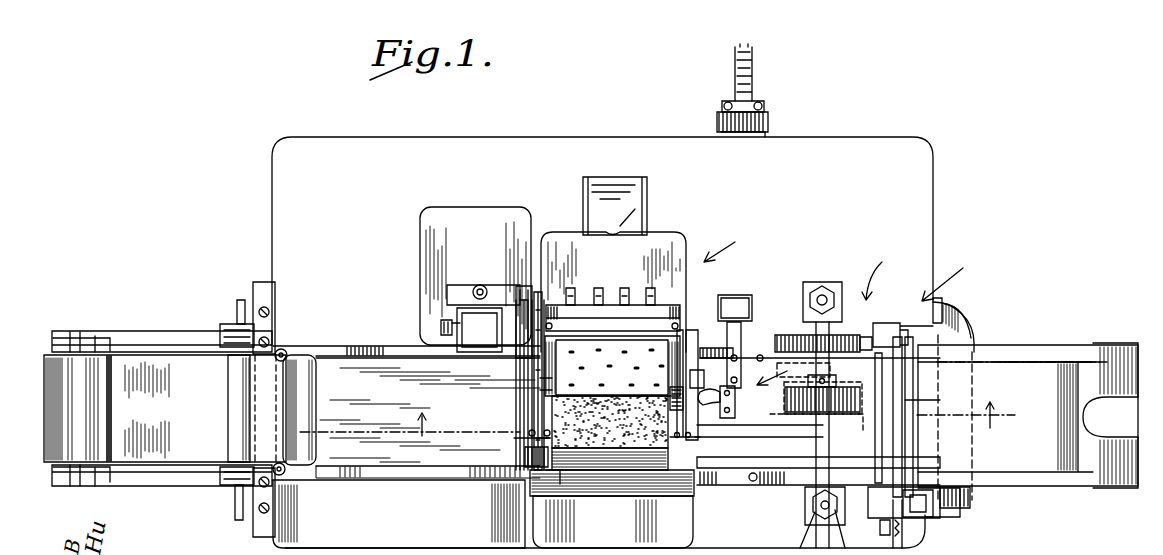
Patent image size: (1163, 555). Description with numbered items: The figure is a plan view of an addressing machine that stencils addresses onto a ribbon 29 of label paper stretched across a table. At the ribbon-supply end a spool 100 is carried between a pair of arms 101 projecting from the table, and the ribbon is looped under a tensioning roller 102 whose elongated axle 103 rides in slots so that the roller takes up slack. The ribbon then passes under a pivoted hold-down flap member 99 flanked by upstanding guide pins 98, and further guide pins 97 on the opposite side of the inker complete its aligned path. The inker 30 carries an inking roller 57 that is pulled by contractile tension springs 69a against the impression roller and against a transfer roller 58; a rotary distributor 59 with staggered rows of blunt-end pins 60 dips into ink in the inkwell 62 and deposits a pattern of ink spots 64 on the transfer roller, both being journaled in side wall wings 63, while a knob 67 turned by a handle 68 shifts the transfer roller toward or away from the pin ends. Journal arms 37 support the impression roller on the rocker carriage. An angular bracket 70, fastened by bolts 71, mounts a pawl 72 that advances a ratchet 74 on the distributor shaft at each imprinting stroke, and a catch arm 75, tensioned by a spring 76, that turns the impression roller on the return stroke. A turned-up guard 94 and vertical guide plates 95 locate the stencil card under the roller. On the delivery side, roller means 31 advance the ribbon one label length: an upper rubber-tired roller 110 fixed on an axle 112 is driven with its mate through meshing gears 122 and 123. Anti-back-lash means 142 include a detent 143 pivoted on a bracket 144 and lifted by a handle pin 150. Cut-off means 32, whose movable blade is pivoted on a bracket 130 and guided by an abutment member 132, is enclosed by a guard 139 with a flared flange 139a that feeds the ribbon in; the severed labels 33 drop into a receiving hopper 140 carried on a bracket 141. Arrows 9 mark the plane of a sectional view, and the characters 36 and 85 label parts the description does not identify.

The section line 9 is at (657, 422).
The ribbon 29 is at (365, 457).
The inker 30 is at (725, 245).
The roller means 31 is at (878, 340).
The cut-off means 32 is at (943, 273).
The labels 33 is at (1055, 465).
The plate 36 is at (665, 488).
The journal arms 37 is at (668, 480).
The inking roller 57 is at (550, 411).
The transfer roller 58 is at (705, 312).
The rotary distributor 59 is at (663, 302).
The ink distributing pins 60 is at (650, 288).
The inkwell 62 is at (645, 232).
The side wall wings 63 is at (548, 382).
The spots of ink 64 is at (618, 348).
The knob 67 is at (703, 376).
The handle 68 is at (704, 348).
The contractile tension springs 69a is at (550, 397).
The angular bracket 70 is at (510, 290).
The bolts 71 is at (473, 287).
The pawl 72 is at (495, 328).
The ratchet 74 is at (528, 300).
The catch arm 75 is at (565, 478).
The spring 76 is at (548, 442).
The rod 85 is at (462, 325).
The guard 94 is at (586, 515).
The vertical guide plates 95 is at (530, 516).
The guide pins 97 is at (752, 348).
The guide pins 98 is at (282, 350).
The hold-down flap member 99 is at (285, 400).
The spool 100 is at (48, 352).
The arms 101 is at (147, 330).
The roller 102 is at (236, 423).
The axle 103 is at (238, 308).
The upper roller 110 is at (838, 398).
The axle 112 is at (818, 460).
The gear 122 is at (830, 290).
The gear 123 is at (841, 296).
The bracket 130 is at (950, 508).
The abutment member 132 is at (890, 320).
The guard 139 is at (908, 400).
The flange 139a is at (880, 392).
The receiving hopper 140 is at (1110, 488).
The bracket 141 is at (955, 318).
The anti-back-lash means 142 is at (778, 371).
The detent 143 is at (750, 412).
The bracket 144 is at (738, 352).
The handle pin 150 is at (735, 425).